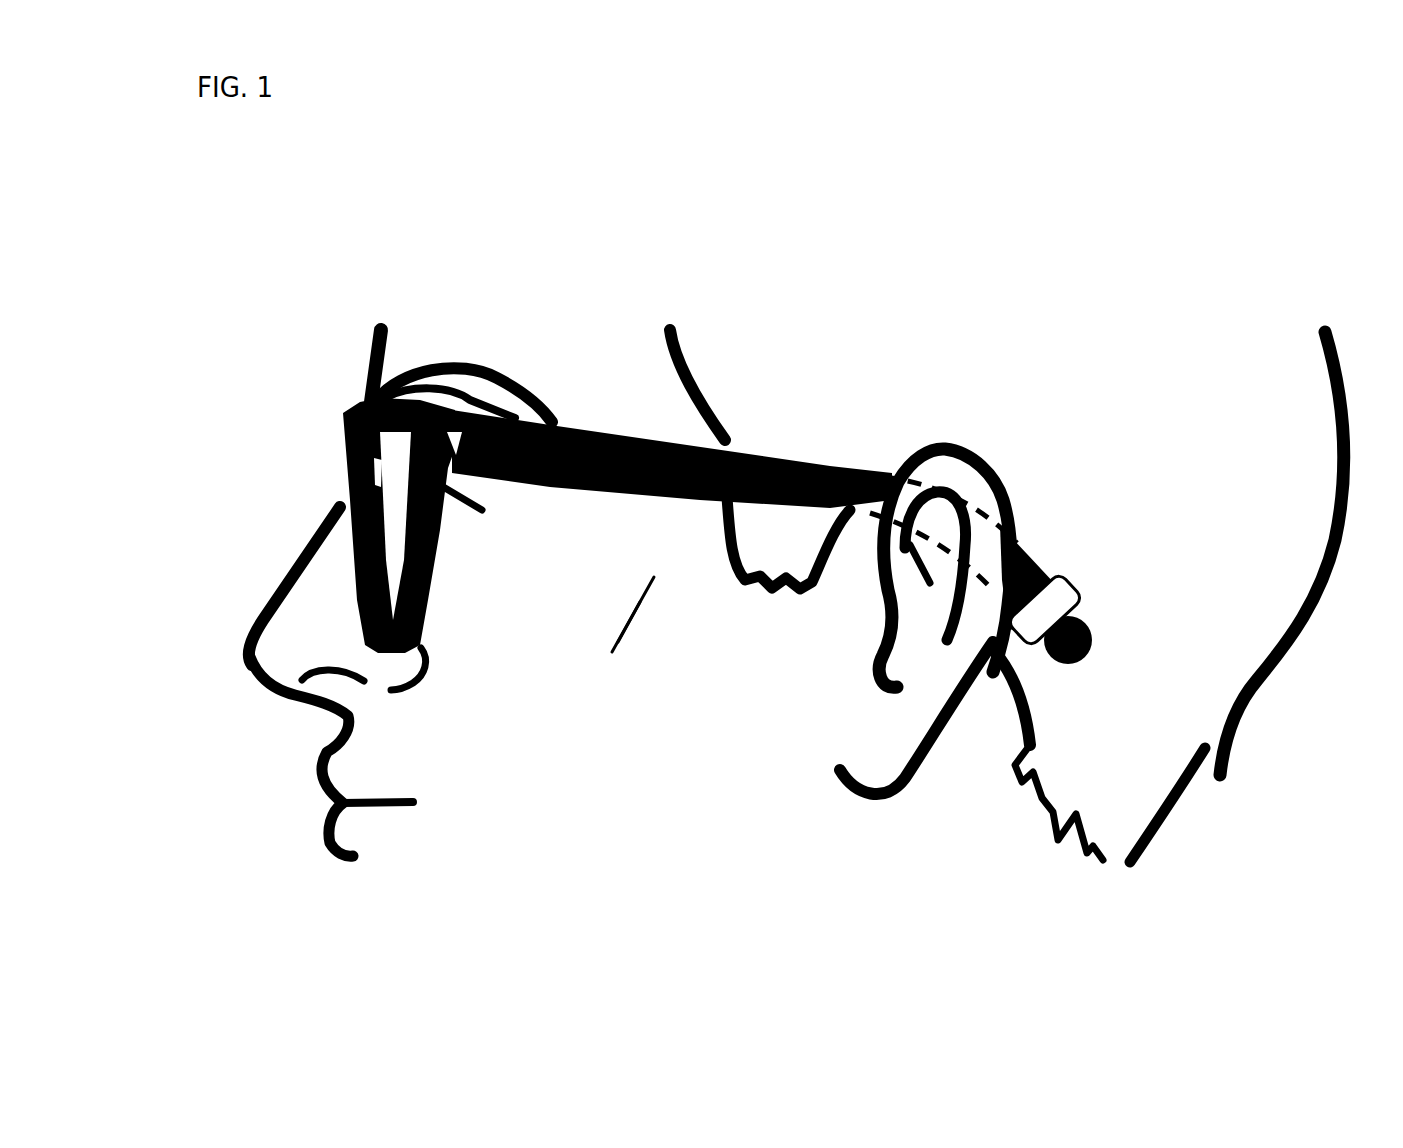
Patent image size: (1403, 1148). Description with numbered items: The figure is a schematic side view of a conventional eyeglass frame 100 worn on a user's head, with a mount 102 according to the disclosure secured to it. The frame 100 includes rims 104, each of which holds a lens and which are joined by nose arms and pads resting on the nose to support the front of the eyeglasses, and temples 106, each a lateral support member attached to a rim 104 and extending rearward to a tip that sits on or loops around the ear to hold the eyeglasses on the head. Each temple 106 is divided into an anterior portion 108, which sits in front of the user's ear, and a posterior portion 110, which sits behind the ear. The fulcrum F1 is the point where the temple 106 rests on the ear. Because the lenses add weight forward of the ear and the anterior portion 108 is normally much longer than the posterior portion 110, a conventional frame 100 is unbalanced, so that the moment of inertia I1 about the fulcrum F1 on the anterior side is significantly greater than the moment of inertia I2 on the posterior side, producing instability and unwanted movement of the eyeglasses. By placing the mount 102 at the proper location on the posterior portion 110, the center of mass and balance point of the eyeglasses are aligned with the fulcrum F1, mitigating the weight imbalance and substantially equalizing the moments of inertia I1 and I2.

The eyeglass frame 100 is at (786, 434).
The mount 102 is at (1037, 620).
The rims 104 is at (312, 462).
The temple 106 is at (906, 492).
The anterior portion 108 is at (787, 443).
The posterior portion 110 is at (1027, 547).
The fulcrum F1 is at (962, 486).
The moment of inertia I1 is at (867, 562).
The moment of inertia I2 is at (1023, 677).